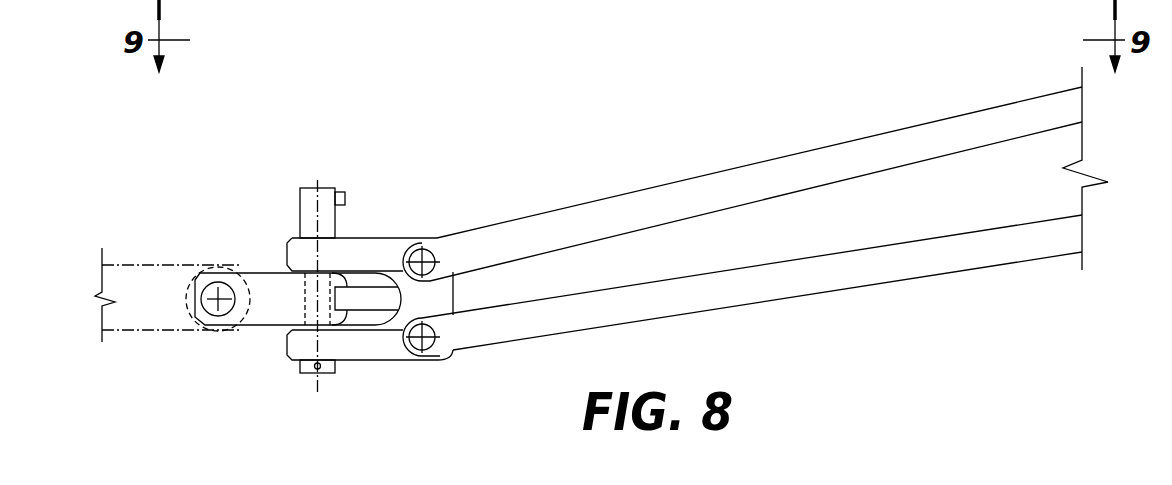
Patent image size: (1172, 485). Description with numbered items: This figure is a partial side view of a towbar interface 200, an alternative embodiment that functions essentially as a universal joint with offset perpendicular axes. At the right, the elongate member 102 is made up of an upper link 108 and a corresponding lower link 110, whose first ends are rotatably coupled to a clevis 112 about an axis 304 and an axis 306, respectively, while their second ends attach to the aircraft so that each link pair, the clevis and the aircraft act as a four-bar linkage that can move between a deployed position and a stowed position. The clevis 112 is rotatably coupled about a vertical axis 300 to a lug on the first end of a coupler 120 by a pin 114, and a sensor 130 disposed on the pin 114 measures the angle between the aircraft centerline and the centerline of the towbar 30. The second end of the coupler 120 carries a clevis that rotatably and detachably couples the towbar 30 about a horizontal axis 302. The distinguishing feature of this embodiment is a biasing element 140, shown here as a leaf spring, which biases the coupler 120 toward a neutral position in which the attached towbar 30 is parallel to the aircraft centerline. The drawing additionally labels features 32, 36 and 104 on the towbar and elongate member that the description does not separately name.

The towbar 30 is at (126, 338).
The tongue tube 32 is at (152, 265).
The pivot opening 36 is at (200, 318).
The elongate member 102 is at (755, 238).
The first arm 104 is at (742, 184).
The upper link 108 is at (722, 172).
The lower link 110 is at (735, 305).
The clevis 112 is at (365, 238).
The pin 114 is at (342, 273).
The coupler 120 is at (258, 325).
The sensor 130 is at (346, 196).
The biasing element 140 is at (368, 305).
The towbar interface 200 is at (558, 136).
The vertical axis 300 is at (301, 188).
The horizontal axis 302 is at (216, 293).
The axis 304 is at (428, 249).
The axis 306 is at (428, 350).